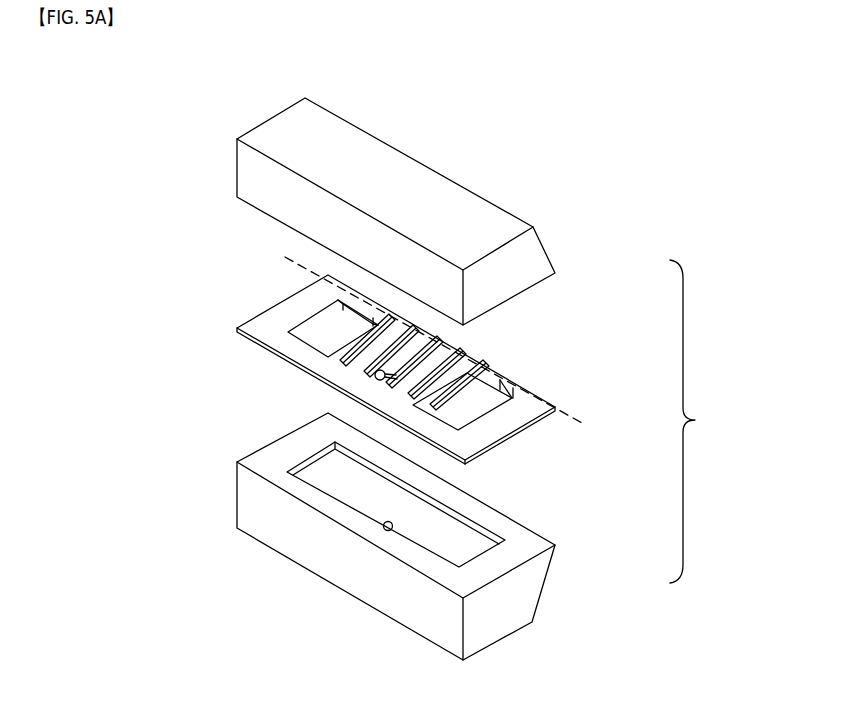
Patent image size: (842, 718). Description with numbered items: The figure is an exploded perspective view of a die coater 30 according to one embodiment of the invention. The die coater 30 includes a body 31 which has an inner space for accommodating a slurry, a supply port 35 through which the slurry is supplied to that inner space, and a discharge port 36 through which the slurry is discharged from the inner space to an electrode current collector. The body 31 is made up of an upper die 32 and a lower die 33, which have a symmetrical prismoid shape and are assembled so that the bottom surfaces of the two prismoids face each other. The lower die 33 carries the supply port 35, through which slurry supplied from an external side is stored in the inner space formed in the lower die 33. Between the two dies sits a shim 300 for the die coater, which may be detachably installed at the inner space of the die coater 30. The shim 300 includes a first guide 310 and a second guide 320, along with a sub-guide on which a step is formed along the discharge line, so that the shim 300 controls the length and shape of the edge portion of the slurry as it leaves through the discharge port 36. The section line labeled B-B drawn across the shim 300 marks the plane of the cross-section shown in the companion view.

The die coater 30 is at (154, 114).
The body 31 is at (708, 421).
The upper die 32 is at (548, 254).
The lower die 33 is at (548, 586).
The supply port 35 is at (383, 526).
The discharge port 36 is at (460, 344).
The shim 300 is at (226, 362).
The first guide 310 is at (282, 306).
The second guide 320 is at (521, 435).